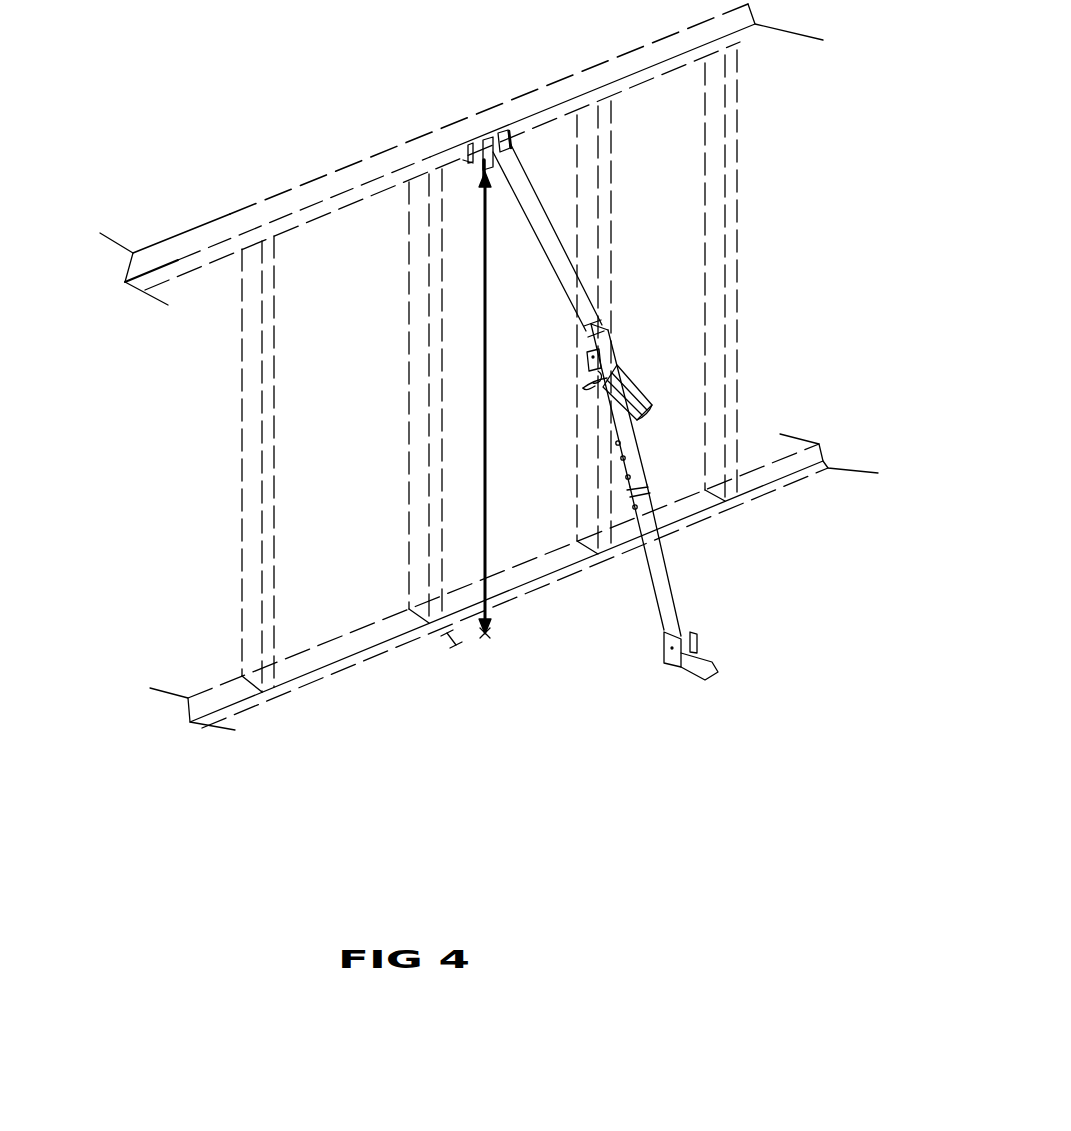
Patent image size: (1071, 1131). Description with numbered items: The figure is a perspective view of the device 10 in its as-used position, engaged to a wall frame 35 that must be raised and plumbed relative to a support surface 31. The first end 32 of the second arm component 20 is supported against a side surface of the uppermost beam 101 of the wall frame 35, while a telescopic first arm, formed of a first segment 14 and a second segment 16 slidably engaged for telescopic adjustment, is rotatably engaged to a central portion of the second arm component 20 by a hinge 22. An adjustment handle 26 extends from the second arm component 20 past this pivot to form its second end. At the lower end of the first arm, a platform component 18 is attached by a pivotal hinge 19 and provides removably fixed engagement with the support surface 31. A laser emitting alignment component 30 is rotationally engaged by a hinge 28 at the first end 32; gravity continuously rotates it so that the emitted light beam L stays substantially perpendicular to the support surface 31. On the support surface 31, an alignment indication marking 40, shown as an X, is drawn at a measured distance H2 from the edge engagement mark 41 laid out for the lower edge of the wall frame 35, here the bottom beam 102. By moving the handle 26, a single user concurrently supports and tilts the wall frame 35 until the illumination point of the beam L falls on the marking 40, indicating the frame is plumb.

The device 10 is at (748, 222).
The first segment 14 is at (615, 435).
The second segment 16 is at (675, 573).
The platform component 18 is at (708, 657).
The pivotal hinge 19 is at (668, 652).
The second arm component 20 is at (538, 208).
The hinge 22 is at (592, 366).
The adjustment handle 26 is at (615, 362).
The hinge 28 is at (507, 137).
The laser emitting alignment component 30 is at (494, 141).
The support surface 31 is at (508, 626).
The first end 32 is at (461, 154).
The wall frame 35 is at (152, 389).
The alignment indication marking 40 is at (492, 645).
The edge engagement mark 41 is at (263, 705).
The uppermost beam 101 is at (245, 208).
The bottom beam 102 is at (508, 626).
The light beam L is at (472, 376).
The measured distance H2 is at (452, 648).